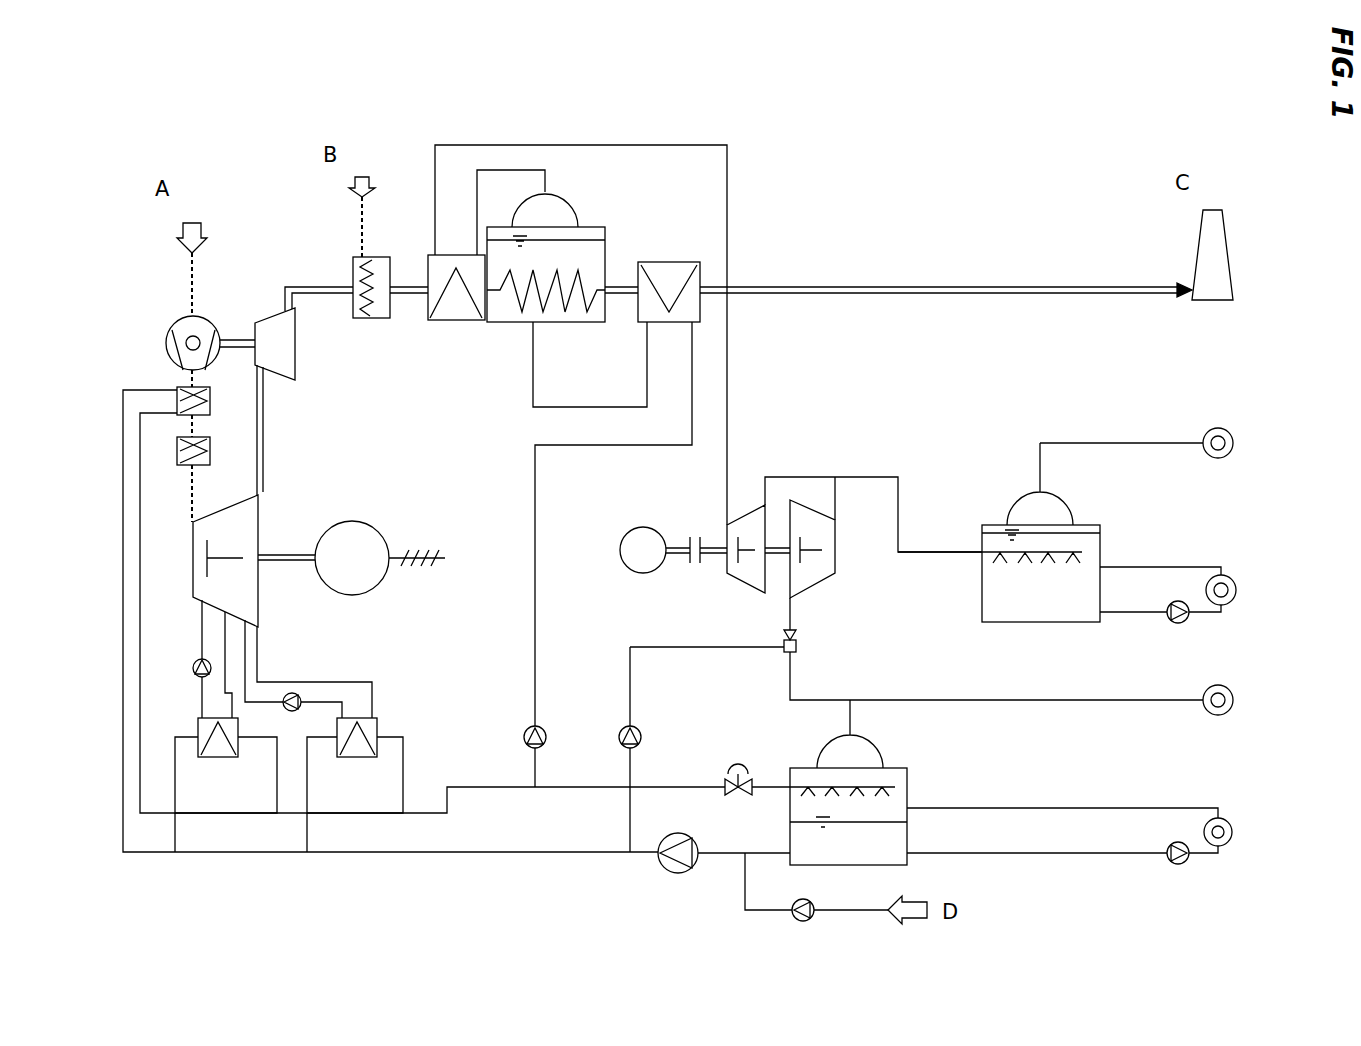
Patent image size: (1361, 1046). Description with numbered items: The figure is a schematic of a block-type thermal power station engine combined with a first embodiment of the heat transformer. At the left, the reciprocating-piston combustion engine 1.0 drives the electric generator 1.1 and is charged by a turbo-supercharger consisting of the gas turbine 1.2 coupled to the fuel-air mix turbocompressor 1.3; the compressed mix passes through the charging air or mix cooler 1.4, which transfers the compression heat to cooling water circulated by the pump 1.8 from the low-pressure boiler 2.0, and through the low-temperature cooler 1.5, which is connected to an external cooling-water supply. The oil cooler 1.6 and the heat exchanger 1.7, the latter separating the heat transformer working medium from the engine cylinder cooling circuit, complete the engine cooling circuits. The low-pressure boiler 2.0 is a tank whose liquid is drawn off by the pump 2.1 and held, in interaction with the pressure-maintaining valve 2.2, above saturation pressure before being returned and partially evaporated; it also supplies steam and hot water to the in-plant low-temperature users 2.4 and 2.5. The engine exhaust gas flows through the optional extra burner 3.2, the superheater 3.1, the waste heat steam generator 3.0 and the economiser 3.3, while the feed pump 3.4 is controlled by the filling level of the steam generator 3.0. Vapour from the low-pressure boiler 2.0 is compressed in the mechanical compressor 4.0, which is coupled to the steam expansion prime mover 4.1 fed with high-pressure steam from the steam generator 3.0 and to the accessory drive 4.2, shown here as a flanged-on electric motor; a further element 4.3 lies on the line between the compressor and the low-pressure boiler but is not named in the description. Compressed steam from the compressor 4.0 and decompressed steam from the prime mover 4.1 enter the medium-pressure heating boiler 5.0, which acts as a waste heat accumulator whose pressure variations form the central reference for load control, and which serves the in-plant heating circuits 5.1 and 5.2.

The reciprocating-piston combustion engine 1.0 is at (254, 561).
The electric generator 1.1 is at (380, 551).
The gas turbine 1.2 is at (258, 401).
The fuel-air mix turbocompressor 1.3 is at (195, 342).
The charging air or mix cooler 1.4 is at (209, 392).
The low-temperature cooler 1.5 is at (209, 468).
The oil cooler 1.6 is at (226, 706).
The heat exchanger 1.7 is at (324, 716).
The pump 1.8 is at (673, 866).
The low-pressure boiler 2.0 is at (861, 782).
The pump 2.1 is at (806, 922).
The pressure-maintaining valve 2.2 is at (743, 762).
The in-plant low-temperature user 2.4 is at (1073, 824).
The in-plant low-temperature user 2.5 is at (1014, 683).
The waste heat steam generator 3.0 is at (546, 272).
The superheater 3.1 is at (456, 304).
The extra burner 3.2 is at (373, 304).
The economiser 3.3 is at (669, 306).
The feed pump 3.4 is at (517, 738).
The mechanical compressor 4.0 is at (816, 547).
The steam expansion prime mover 4.1 is at (854, 547).
The accessory drive 4.2 is at (673, 572).
The expansion valve 4.3 is at (768, 636).
The medium-pressure heating boiler 5.0 is at (999, 532).
The in-plant heating circuit 5.1 is at (1169, 581).
The in-plant heating circuit 5.2 is at (1139, 430).